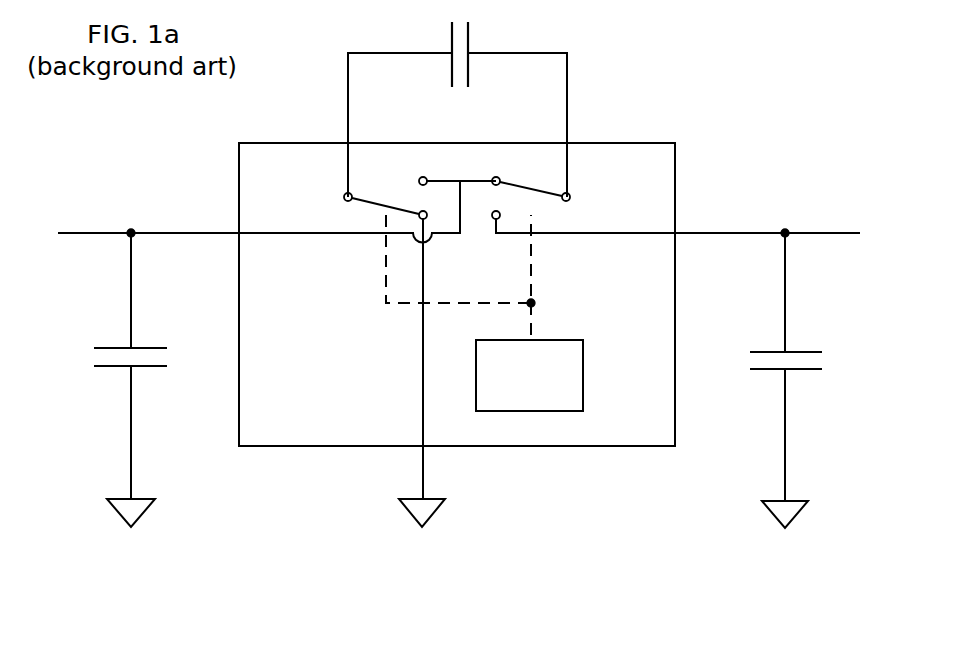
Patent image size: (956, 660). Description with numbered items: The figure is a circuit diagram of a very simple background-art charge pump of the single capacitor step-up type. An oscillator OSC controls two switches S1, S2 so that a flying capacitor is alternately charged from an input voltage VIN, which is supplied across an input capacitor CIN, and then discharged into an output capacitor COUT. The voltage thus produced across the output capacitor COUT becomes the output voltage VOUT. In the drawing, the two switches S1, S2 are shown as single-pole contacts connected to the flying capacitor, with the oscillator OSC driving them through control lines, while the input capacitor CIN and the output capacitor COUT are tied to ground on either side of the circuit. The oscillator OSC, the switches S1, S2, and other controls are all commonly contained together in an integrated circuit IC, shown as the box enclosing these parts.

The integrated circuit IC is at (457, 294).
The switch S1 is at (401, 198).
The switch S2 is at (550, 198).
The oscillator OSC is at (484, 313).
The input voltage VIN is at (88, 214).
The output voltage VOUT is at (834, 216).
The input capacitor CIN is at (104, 380).
The output capacitor COUT is at (819, 380).